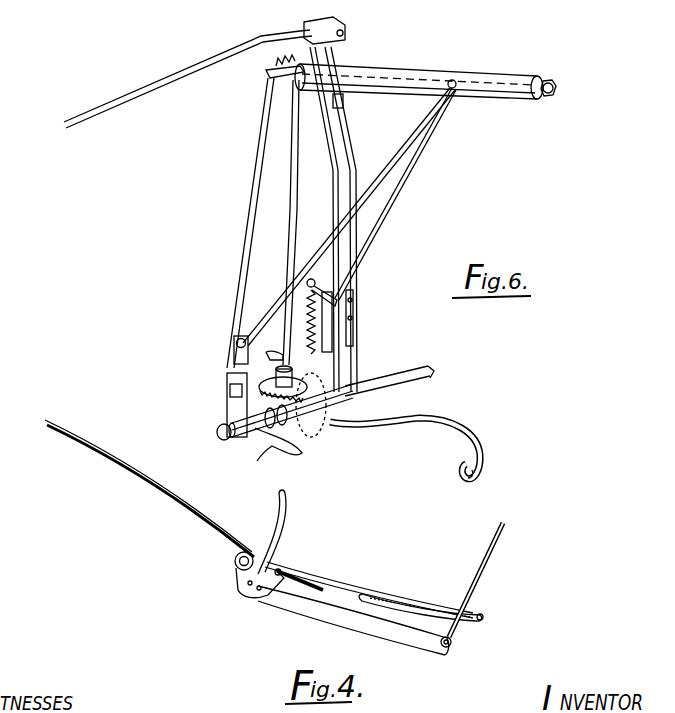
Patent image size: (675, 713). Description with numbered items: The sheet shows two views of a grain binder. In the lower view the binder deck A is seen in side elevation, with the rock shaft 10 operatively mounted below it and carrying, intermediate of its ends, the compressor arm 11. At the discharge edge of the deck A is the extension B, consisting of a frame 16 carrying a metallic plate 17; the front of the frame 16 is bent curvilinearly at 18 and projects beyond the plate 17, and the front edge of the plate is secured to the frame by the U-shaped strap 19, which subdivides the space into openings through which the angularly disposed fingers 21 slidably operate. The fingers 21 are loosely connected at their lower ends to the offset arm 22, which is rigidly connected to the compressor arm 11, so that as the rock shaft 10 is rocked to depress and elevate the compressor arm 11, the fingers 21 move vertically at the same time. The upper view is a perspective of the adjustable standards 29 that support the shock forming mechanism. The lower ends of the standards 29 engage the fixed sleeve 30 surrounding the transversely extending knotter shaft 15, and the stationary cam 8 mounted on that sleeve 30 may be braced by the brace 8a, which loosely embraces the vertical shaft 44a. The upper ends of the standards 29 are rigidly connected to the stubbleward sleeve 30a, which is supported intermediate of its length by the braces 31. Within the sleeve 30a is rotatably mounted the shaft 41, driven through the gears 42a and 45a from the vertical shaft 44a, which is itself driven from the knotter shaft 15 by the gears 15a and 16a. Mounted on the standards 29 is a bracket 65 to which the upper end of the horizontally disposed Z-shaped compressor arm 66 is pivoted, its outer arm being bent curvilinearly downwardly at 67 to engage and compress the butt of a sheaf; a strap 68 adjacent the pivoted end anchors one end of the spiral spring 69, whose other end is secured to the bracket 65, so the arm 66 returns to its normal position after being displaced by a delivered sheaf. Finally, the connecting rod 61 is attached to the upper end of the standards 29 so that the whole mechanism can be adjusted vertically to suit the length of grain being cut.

In FIG. 6, the connecting rod 61 is at (208, 58).
In FIG. 6, the gear 42a is at (285, 68).
In FIG. 6, the sleeve 30a is at (413, 74).
In FIG. 6, the shaft 41 is at (552, 87).
In FIG. 6, the gear 45a is at (312, 103).
In FIG. 6, the vertical shaft 44a is at (228, 162).
In FIG. 6, the braces 31 is at (343, 184).
In FIG. 6, the standards 29 is at (340, 184).
In FIG. 6, the spiral spring 69 is at (308, 316).
In FIG. 6, the bracket 65 is at (333, 307).
In FIG. 6, the brace 8a is at (236, 343).
In FIG. 6, the gear 15a is at (212, 375).
In FIG. 6, the strap 68 is at (293, 365).
In FIG. 6, the fixed sleeve 30 is at (398, 372).
In FIG. 6, the knotter shaft 15 is at (216, 432).
In FIG. 6, the cam 8 is at (280, 440).
In FIG. 6, the gear 16a is at (318, 422).
In FIG. 6, the Z-shaped compressor arm 66 is at (403, 420).
In FIG. 6, the curvilinear downwardly bent portion 67 is at (483, 462).
In FIG. 4, the binder deck A is at (180, 508).
In FIG. 4, the rock shaft 10 is at (237, 564).
In FIG. 4, the compressor arm 11 is at (288, 514).
In FIG. 4, the extension B is at (347, 590).
In FIG. 4, the offset arm 22 is at (312, 612).
In FIG. 4, the metallic plate 17 is at (380, 600).
In FIG. 4, the U-shaped strap 19 is at (450, 603).
In FIG. 4, the curvilinear portion 18 is at (486, 617).
In FIG. 4, the fingers 21 is at (487, 575).
In FIG. 4, the frame 16 is at (394, 626).